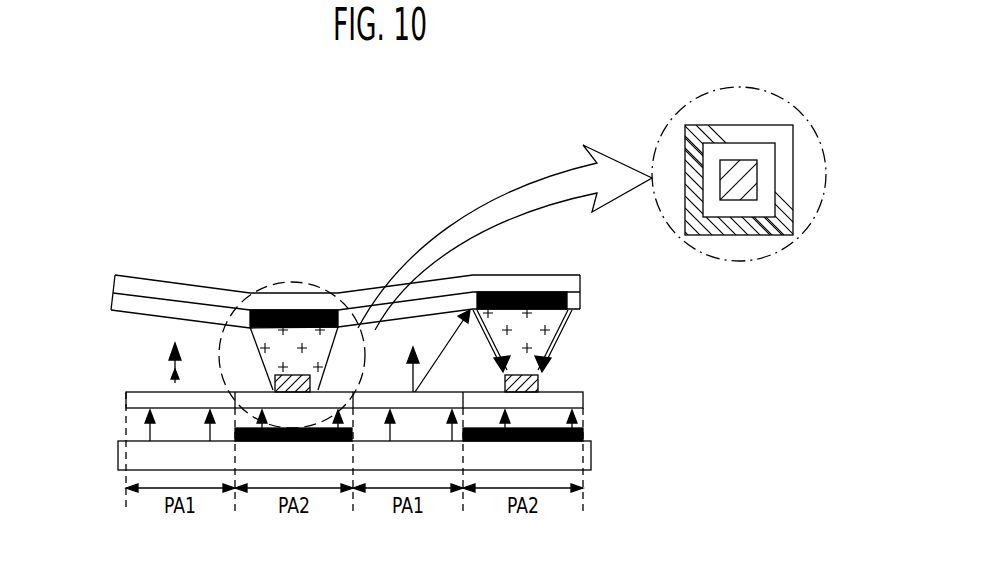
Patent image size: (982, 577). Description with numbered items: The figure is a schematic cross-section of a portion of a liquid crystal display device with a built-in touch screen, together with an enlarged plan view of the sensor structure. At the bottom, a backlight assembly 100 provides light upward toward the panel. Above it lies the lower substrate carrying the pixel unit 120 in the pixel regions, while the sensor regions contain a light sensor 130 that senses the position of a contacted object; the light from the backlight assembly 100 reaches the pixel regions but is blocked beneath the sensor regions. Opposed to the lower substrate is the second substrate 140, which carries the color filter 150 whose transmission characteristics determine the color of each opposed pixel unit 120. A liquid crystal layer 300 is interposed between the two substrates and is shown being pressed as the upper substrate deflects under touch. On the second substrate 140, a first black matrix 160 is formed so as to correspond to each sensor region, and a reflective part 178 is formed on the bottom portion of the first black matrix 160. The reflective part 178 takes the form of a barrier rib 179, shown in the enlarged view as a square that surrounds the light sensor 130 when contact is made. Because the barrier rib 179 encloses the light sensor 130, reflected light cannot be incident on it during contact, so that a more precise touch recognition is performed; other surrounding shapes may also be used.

The backlight assembly 100 is at (138, 455).
The pixel unit 120 is at (140, 400).
The light sensor 130 is at (540, 383).
The second substrate 140 is at (125, 285).
The color filter 150 is at (120, 300).
The first black matrix 160 is at (288, 310).
The reflective part 178 is at (262, 352).
The barrier rib 179 is at (740, 213).
The liquid crystal layer 300 is at (175, 372).